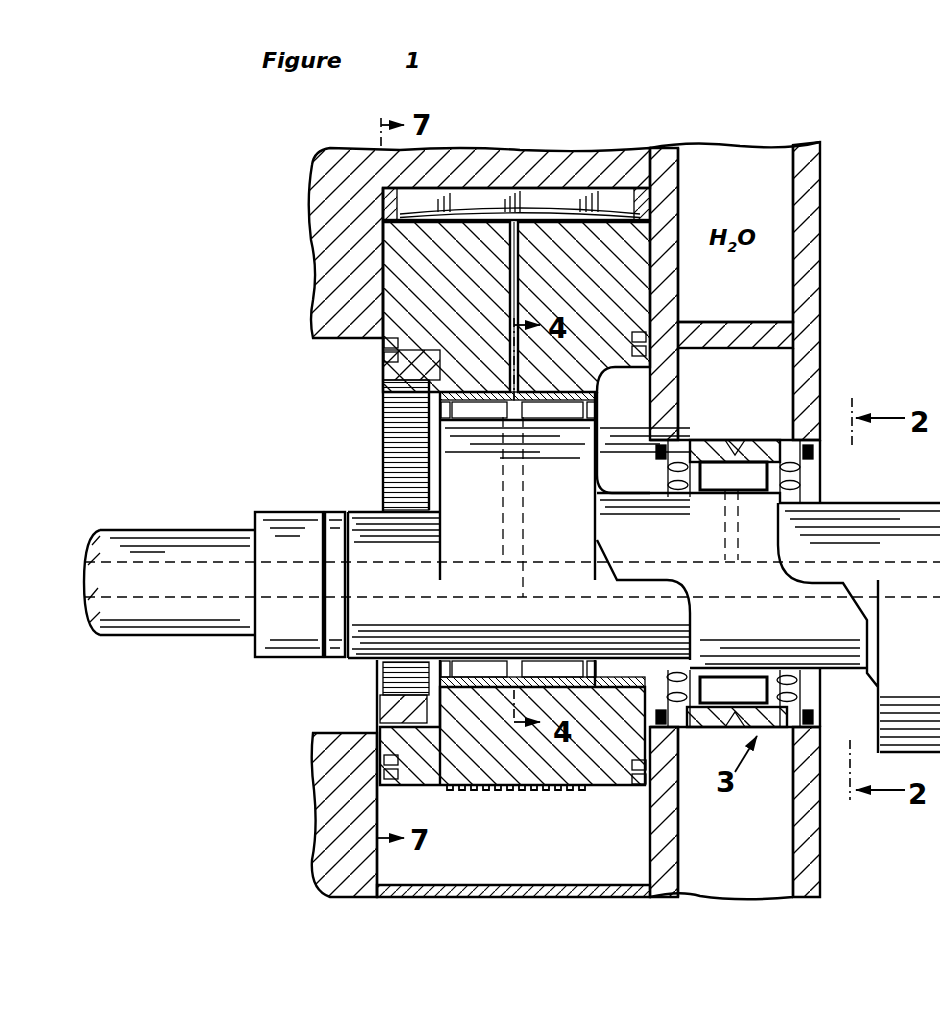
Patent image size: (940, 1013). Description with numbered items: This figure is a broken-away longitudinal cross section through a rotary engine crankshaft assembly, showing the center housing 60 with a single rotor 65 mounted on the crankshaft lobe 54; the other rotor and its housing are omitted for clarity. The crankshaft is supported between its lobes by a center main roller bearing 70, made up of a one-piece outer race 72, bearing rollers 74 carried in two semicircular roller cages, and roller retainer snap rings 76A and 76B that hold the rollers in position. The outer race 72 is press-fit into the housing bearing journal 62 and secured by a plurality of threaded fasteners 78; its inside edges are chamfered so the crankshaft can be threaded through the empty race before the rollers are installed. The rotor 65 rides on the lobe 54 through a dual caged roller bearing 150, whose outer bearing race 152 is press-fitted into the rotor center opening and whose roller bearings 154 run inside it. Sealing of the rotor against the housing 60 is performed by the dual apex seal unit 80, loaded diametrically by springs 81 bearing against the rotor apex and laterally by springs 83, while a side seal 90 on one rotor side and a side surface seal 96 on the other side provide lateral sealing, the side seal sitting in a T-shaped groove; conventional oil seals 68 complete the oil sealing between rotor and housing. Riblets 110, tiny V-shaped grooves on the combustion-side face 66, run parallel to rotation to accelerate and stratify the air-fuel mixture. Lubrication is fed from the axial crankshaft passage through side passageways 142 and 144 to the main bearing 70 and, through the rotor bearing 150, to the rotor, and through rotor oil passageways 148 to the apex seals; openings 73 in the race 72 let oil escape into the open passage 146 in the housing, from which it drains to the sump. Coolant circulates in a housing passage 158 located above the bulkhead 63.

The crankshaft lobe 54 is at (572, 504).
The center housing 60 is at (313, 283).
The housing bearing journal 62 is at (772, 722).
The bulkhead 63 is at (712, 322).
The rotor 65 is at (383, 335).
The combustion-side face 66 is at (595, 787).
The oil seals 68 is at (383, 347).
The center main roller bearing 70 is at (692, 412).
The outer race 72 is at (760, 450).
The openings 73 is at (733, 450).
The bearing rollers 74 is at (723, 450).
The retainer snap ring 76A is at (780, 480).
The retainer snap ring 76B is at (655, 480).
The threaded fasteners 78 is at (812, 445).
The dual apex seal unit 80 is at (669, 124).
The springs 81 is at (516, 307).
The springs 83 is at (383, 192).
The side seal 90 is at (385, 768).
The side surface seal 96 is at (665, 762).
The riblets 110 is at (537, 790).
The side passageway 142 is at (725, 517).
The rotor oil passageway 144 is at (518, 548).
The open passage 146 is at (747, 873).
The rotor oil passageways 148 is at (528, 284).
The dual roller bearing 150 is at (483, 372).
The outer bearing race 152 is at (537, 392).
The roller bearings 154 is at (487, 422).
The coolant passage 158 is at (735, 233).